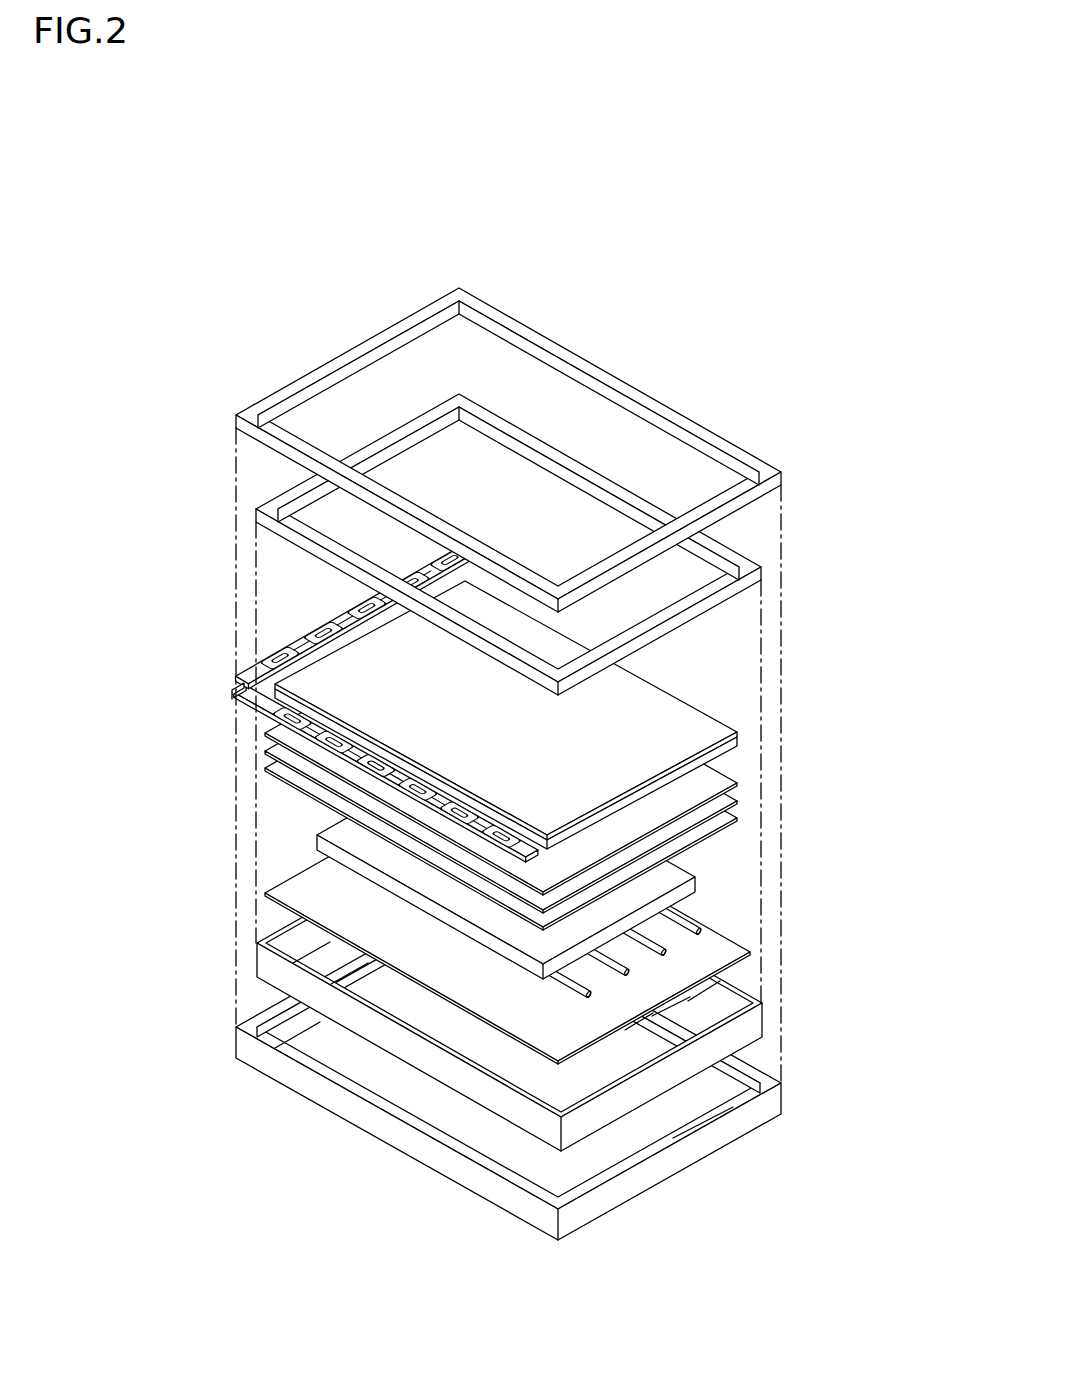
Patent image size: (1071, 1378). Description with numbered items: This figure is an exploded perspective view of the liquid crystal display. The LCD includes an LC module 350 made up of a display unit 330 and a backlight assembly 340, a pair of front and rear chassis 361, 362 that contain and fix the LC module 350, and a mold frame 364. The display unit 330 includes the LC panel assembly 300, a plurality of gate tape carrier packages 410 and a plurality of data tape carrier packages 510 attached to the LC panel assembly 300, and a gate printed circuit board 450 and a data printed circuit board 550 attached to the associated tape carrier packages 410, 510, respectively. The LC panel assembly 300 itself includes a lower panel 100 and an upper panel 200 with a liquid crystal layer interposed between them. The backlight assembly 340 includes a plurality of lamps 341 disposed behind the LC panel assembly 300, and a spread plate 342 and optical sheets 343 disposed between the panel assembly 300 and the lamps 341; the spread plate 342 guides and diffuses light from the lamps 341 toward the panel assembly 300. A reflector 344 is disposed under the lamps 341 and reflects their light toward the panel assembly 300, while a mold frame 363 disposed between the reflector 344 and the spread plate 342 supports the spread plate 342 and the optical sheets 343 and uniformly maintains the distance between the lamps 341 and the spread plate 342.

The lower panel 100 is at (737, 747).
The upper panel 200 is at (737, 736).
The LC panel assembly 300 is at (559, 715).
The display unit 330 is at (559, 715).
The backlight assembly 340 is at (601, 844).
The lamps 341 is at (703, 922).
The spread plate 342 is at (695, 885).
The optical sheets 343 is at (550, 777).
The reflector 344 is at (692, 960).
The LC module 350 is at (307, 740).
The front chassis 361 is at (541, 340).
The rear chassis 362 is at (663, 1158).
The mold frame 363 is at (720, 595).
The mold frame 364 is at (692, 1060).
The gate tape carrier packages 410 is at (307, 640).
The gate printed circuit board 450 is at (337, 625).
The data tape carrier packages 510 is at (207, 681).
The data printed circuit board 550 is at (271, 724).